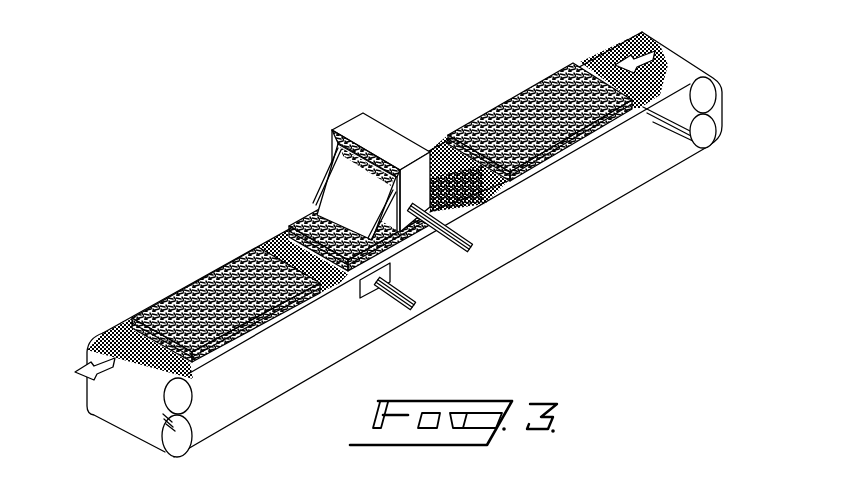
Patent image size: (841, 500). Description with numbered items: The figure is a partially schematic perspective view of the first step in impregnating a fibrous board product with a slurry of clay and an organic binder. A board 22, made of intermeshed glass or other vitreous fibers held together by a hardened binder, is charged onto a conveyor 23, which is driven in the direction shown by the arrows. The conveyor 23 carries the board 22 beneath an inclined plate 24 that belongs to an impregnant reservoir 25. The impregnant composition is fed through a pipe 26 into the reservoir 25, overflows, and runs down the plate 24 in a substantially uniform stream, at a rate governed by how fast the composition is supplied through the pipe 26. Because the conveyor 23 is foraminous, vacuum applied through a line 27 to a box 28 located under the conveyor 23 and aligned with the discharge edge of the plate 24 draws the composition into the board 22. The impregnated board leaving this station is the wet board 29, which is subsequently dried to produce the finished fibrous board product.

The board 22 is at (510, 98).
The conveyor 23 is at (110, 331).
The inclined plate 24 is at (334, 164).
The impregnant reservoir 25 is at (364, 113).
The pipe 26 is at (472, 237).
The line 27 is at (413, 300).
The box 28 is at (393, 272).
The wet board 29 is at (213, 268).